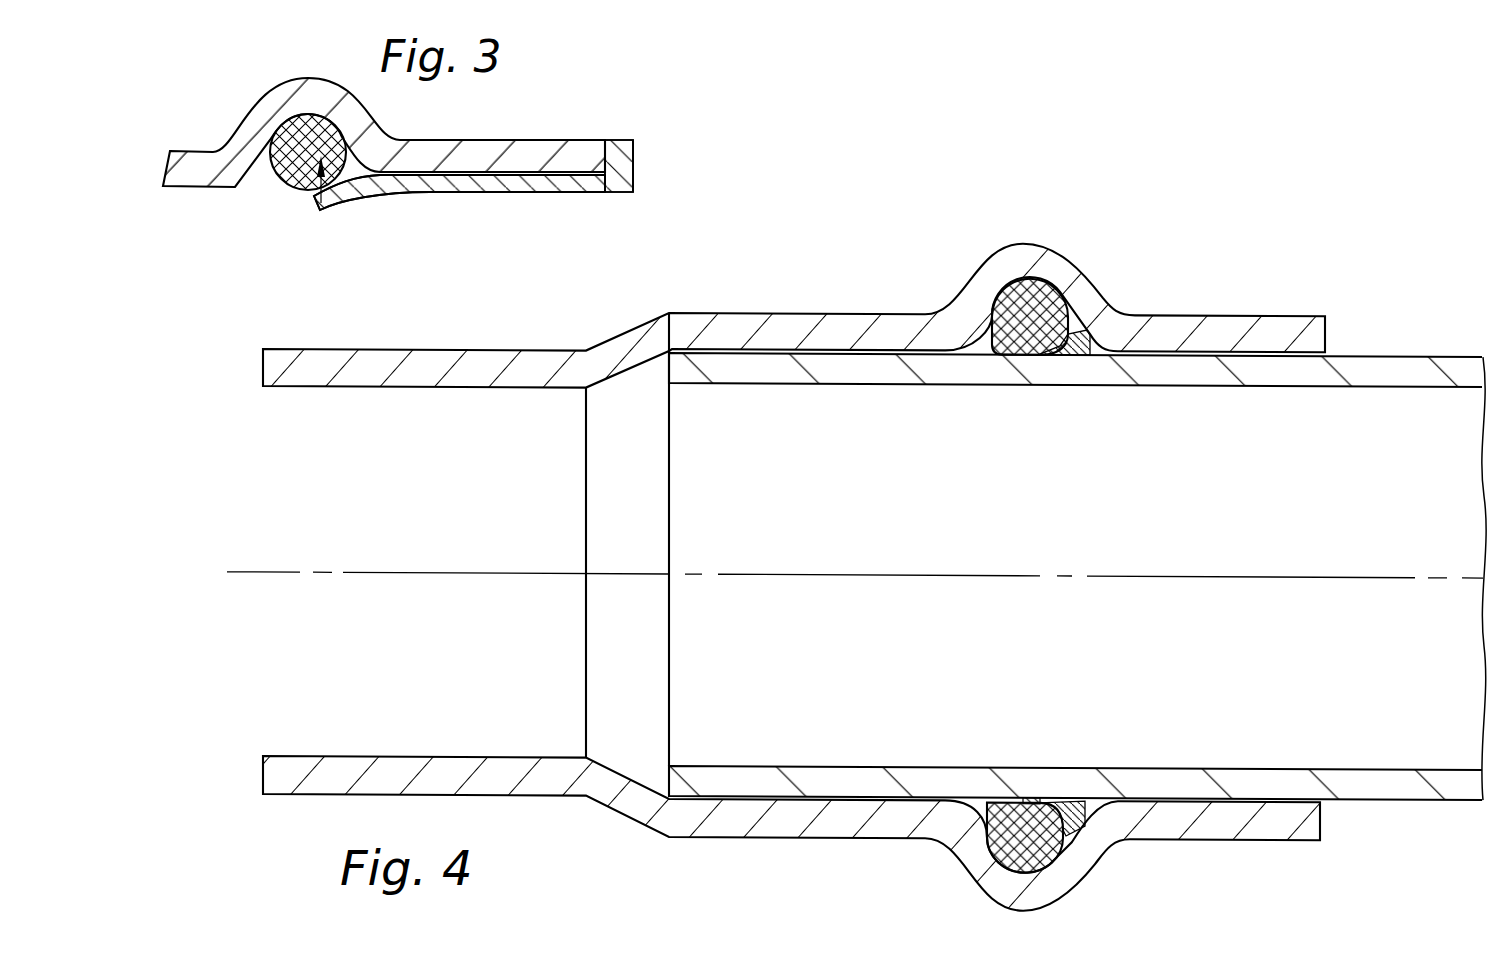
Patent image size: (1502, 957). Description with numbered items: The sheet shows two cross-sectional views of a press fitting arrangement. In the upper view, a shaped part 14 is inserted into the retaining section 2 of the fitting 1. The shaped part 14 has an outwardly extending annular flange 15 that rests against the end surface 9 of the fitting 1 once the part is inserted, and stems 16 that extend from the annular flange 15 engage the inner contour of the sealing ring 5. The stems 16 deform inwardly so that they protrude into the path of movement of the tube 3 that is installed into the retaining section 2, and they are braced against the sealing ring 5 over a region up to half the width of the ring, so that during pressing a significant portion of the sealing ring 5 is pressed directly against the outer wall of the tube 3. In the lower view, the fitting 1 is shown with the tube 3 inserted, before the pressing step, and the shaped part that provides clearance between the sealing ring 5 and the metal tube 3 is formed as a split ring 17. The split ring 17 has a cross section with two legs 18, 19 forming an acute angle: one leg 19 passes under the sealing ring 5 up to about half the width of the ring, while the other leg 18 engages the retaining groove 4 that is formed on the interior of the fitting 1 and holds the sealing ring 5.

In FIG. 4, the fitting 1 is at (794, 313).
In FIG. 3, the retaining section 2 is at (173, 199).
In FIG. 4, the tube 3 is at (868, 366).
In FIG. 4, the retaining groove 4 is at (1082, 880).
In FIG. 3, the sealing ring 5 is at (289, 152).
In FIG. 4, the sealing ring 5 is at (1040, 306).
In FIG. 3, the end surface 9 is at (601, 152).
In FIG. 3, the shaped part 14 is at (644, 141).
In FIG. 3, the annular flange 15 is at (618, 147).
In FIG. 3, the stems 16 is at (362, 192).
In FIG. 4, the split ring 17 is at (1086, 337).
In FIG. 4, the leg 18 is at (1068, 812).
In FIG. 4, the leg 19 is at (1035, 806).